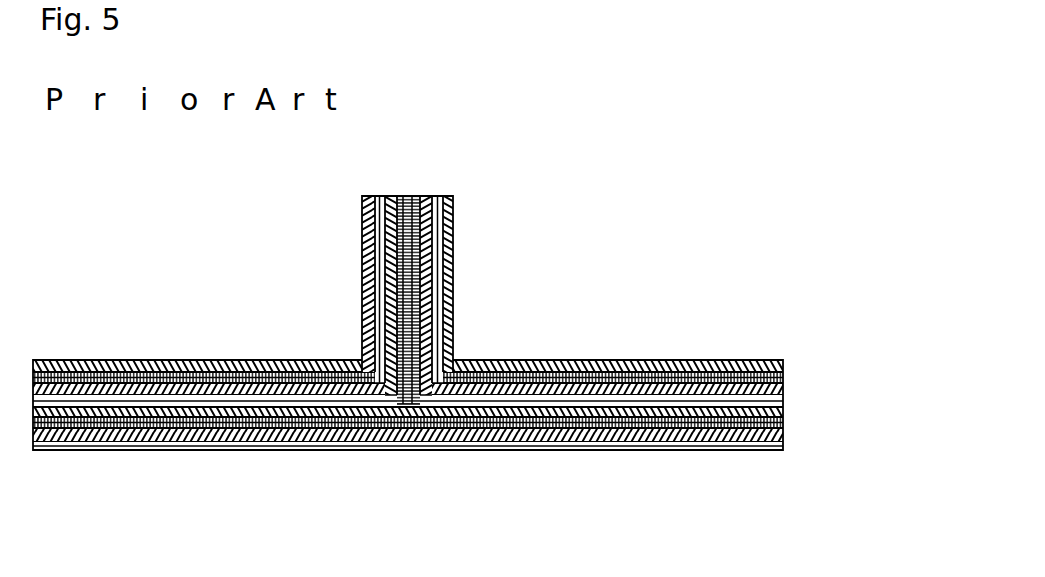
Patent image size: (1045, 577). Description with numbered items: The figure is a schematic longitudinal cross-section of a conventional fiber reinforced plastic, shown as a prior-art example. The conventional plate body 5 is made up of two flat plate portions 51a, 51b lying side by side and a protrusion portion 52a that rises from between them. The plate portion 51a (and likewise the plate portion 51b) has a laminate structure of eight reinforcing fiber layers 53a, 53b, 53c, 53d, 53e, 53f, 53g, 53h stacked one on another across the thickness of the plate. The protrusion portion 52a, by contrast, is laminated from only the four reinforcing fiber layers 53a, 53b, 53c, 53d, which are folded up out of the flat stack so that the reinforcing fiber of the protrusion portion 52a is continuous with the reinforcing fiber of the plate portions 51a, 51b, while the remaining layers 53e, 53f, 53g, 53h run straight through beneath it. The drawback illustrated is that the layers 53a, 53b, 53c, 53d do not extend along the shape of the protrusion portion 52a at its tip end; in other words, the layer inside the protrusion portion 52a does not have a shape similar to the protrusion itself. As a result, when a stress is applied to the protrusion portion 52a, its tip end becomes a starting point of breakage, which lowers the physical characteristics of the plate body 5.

The plate body 5 is at (583, 243).
The plate portion 51a is at (773, 360).
The plate portion 51b is at (333, 357).
The protrusion portion 52a is at (458, 352).
The reinforcing fiber layer 53a is at (842, 305).
The reinforcing fiber layer 53b is at (842, 342).
The reinforcing fiber layer 53c is at (842, 373).
The reinforcing fiber layer 53d is at (842, 400).
The reinforcing fiber layer 53e is at (842, 420).
The reinforcing fiber layer 53f is at (842, 445).
The reinforcing fiber layer 53g is at (842, 482).
The reinforcing fiber layer 53h is at (842, 518).